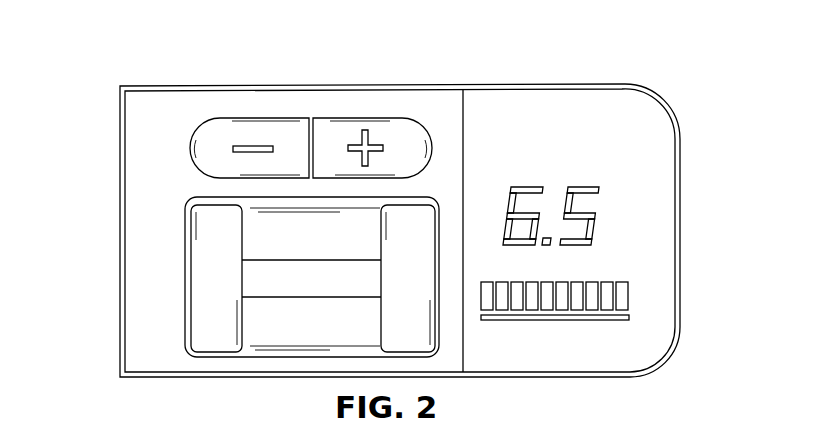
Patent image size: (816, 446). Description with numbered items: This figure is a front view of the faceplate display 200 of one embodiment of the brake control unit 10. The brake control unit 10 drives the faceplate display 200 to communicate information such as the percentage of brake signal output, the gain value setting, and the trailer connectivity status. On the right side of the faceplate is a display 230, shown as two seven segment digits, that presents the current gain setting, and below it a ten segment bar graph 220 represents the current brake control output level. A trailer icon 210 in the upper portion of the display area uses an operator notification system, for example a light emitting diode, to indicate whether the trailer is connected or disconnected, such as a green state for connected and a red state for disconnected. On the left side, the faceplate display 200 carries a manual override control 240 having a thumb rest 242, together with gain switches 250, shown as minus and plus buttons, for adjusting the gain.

The brake control unit 10 is at (323, 40).
The faceplate display 200 is at (519, 64).
The trailer icon 210 is at (605, 232).
The ten segment bar graph 220 is at (579, 350).
The display 230 is at (613, 219).
The manual override control 240 is at (402, 314).
The thumb rest 242 is at (212, 270).
The gain switches 250 is at (299, 125).